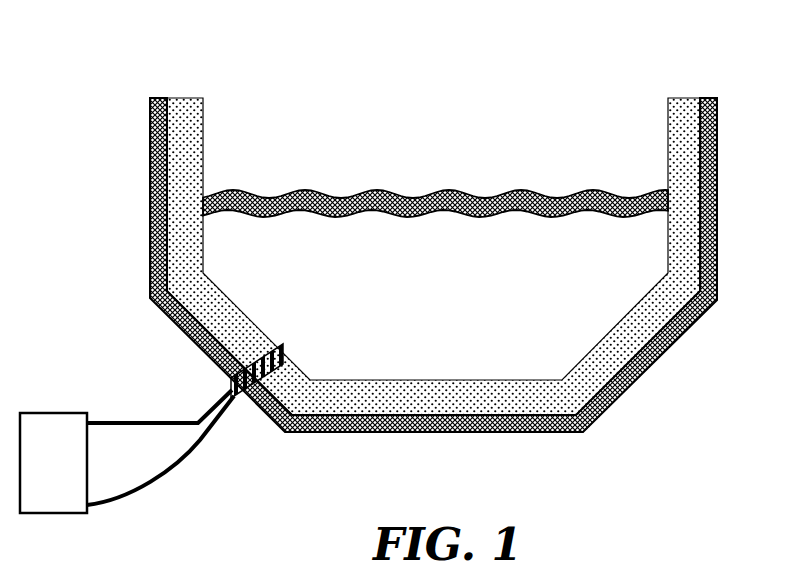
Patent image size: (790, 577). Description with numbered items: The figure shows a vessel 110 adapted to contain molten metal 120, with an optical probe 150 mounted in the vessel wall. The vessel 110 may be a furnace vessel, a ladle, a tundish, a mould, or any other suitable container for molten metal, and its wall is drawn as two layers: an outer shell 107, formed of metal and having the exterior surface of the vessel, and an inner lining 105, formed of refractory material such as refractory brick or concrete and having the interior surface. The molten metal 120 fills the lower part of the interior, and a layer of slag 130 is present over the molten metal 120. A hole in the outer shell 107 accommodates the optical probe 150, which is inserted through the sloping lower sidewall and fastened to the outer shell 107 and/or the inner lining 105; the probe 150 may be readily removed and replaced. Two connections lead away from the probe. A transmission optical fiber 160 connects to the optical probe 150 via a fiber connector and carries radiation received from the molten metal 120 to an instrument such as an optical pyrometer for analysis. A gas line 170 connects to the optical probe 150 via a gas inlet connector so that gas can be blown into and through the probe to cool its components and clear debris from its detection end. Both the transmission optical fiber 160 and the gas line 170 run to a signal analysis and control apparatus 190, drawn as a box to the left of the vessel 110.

The vessel 110 is at (135, 83).
The inner lining 105 is at (683, 120).
The outer shell 107 is at (712, 96).
The slag 130 is at (360, 192).
The molten metal 120 is at (515, 287).
The optical probe 150 is at (250, 405).
The transmission optical fiber 160 is at (186, 468).
The gas line 170 is at (224, 398).
The signal analysis and control apparatus 190 is at (68, 498).